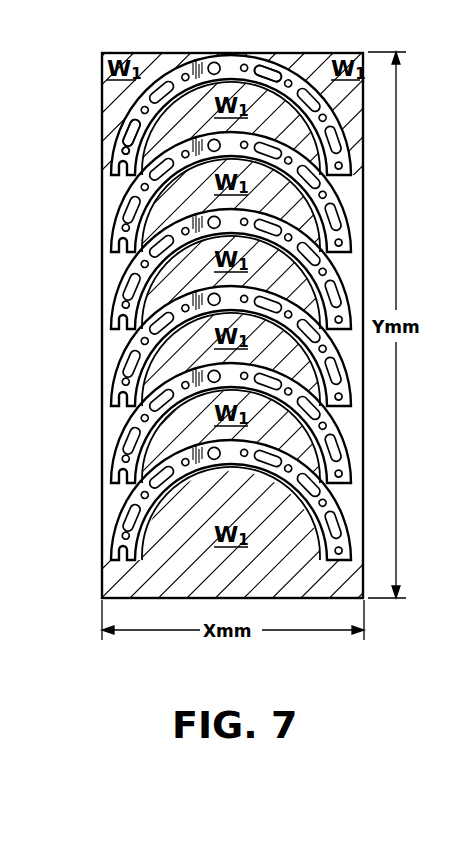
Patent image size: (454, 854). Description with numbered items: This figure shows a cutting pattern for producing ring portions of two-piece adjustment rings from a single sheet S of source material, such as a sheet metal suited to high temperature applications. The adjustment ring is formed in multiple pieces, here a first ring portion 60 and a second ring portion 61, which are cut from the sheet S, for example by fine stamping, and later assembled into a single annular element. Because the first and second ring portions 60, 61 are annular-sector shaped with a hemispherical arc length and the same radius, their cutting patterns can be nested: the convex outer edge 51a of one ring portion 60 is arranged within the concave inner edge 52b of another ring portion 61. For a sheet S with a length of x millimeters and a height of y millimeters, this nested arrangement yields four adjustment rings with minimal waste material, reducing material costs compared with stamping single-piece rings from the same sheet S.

The sheet of source material S is at (110, 499).
The first ring portion 60 is at (120, 213).
The second ring portion 61 is at (127, 123).
The convex outer edge 51a is at (146, 164).
The concave inner edge 52b is at (273, 83).